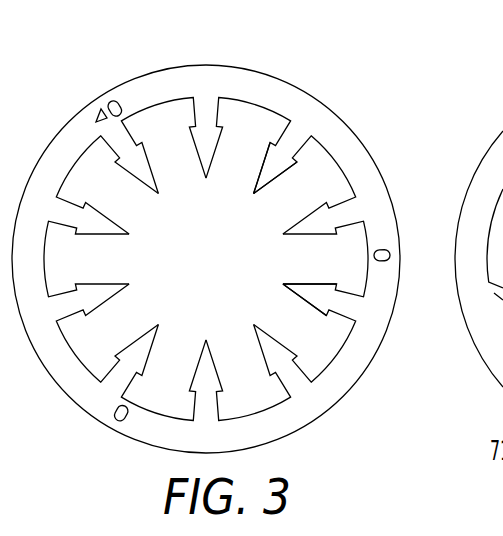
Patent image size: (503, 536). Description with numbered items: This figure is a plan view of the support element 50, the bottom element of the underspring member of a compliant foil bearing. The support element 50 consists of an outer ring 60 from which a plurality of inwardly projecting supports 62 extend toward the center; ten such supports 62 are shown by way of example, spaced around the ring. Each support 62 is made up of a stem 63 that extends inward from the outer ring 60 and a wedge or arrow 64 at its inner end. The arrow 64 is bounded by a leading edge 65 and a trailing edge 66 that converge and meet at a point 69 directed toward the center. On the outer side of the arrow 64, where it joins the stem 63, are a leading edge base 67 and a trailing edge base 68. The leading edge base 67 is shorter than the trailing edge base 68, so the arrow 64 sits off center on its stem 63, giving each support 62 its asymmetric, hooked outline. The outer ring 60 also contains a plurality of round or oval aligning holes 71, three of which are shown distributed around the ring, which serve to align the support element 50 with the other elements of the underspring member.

The support element 50 is at (217, 238).
The outer ring 60 is at (355, 134).
The support 62 is at (303, 345).
The stem 63 is at (344, 199).
The arrow 64 is at (294, 238).
The leading edge 65 is at (260, 170).
The trailing edge 66 is at (271, 184).
The leading edge base 67 is at (191, 122).
The trailing edge base 68 is at (222, 122).
The point 69 is at (283, 284).
The aligning hole 71 is at (115, 422).